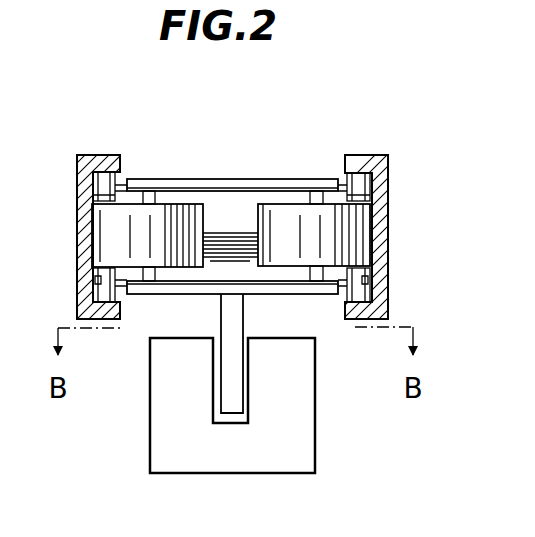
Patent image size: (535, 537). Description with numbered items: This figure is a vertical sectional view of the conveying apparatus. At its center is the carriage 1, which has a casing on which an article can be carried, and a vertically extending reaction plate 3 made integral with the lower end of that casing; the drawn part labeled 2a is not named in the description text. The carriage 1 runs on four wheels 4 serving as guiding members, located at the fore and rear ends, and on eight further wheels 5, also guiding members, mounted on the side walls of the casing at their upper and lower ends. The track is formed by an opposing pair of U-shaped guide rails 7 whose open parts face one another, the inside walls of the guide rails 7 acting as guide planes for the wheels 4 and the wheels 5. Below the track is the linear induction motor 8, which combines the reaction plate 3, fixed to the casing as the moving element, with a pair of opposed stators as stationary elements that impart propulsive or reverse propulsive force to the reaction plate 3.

The carriage 1 is at (244, 165).
The frame plate 2a is at (213, 185).
The reaction plate 3 is at (230, 383).
The wheels 4 is at (167, 222).
The wheels 5 is at (107, 185).
The U-shaped guide rails 7 is at (77, 228).
The linear induction motor 8 is at (323, 447).